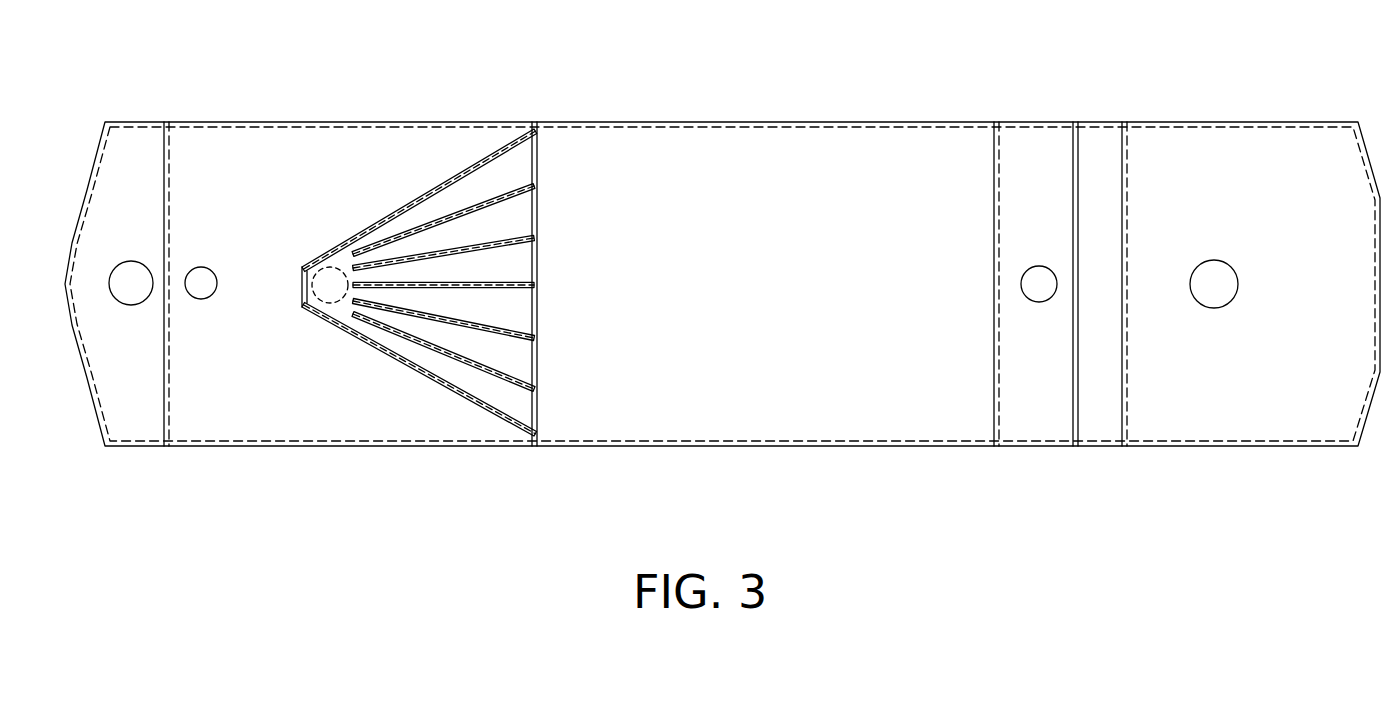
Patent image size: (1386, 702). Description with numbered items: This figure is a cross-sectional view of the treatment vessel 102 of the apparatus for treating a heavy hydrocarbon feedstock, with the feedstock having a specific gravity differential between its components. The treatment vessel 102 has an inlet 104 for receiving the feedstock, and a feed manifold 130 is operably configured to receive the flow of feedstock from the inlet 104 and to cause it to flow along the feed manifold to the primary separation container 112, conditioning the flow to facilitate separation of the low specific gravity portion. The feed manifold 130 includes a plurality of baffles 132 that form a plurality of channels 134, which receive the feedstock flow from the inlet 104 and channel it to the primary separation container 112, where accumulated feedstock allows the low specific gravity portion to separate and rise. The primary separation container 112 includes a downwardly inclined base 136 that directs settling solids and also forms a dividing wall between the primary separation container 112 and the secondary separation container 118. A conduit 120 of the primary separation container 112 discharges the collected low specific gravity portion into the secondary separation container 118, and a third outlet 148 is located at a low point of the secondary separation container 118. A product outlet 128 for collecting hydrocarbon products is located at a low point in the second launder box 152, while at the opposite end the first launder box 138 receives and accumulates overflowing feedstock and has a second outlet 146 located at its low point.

The treatment vessel 102 is at (943, 122).
The inlet 104 is at (328, 305).
The primary separation container 112 is at (754, 292).
The secondary separation container 118 is at (214, 205).
The conduit 120 is at (1039, 302).
The product outlet 128 is at (131, 305).
The feed manifold 130 is at (388, 357).
The baffles 132 is at (427, 250).
The channels 134 is at (528, 152).
The downwardly inclined base 136 is at (720, 177).
The first launder box 138 is at (1197, 207).
The second outlet 146 is at (1214, 308).
The third outlet 148 is at (201, 299).
The second launder box 152 is at (103, 205).